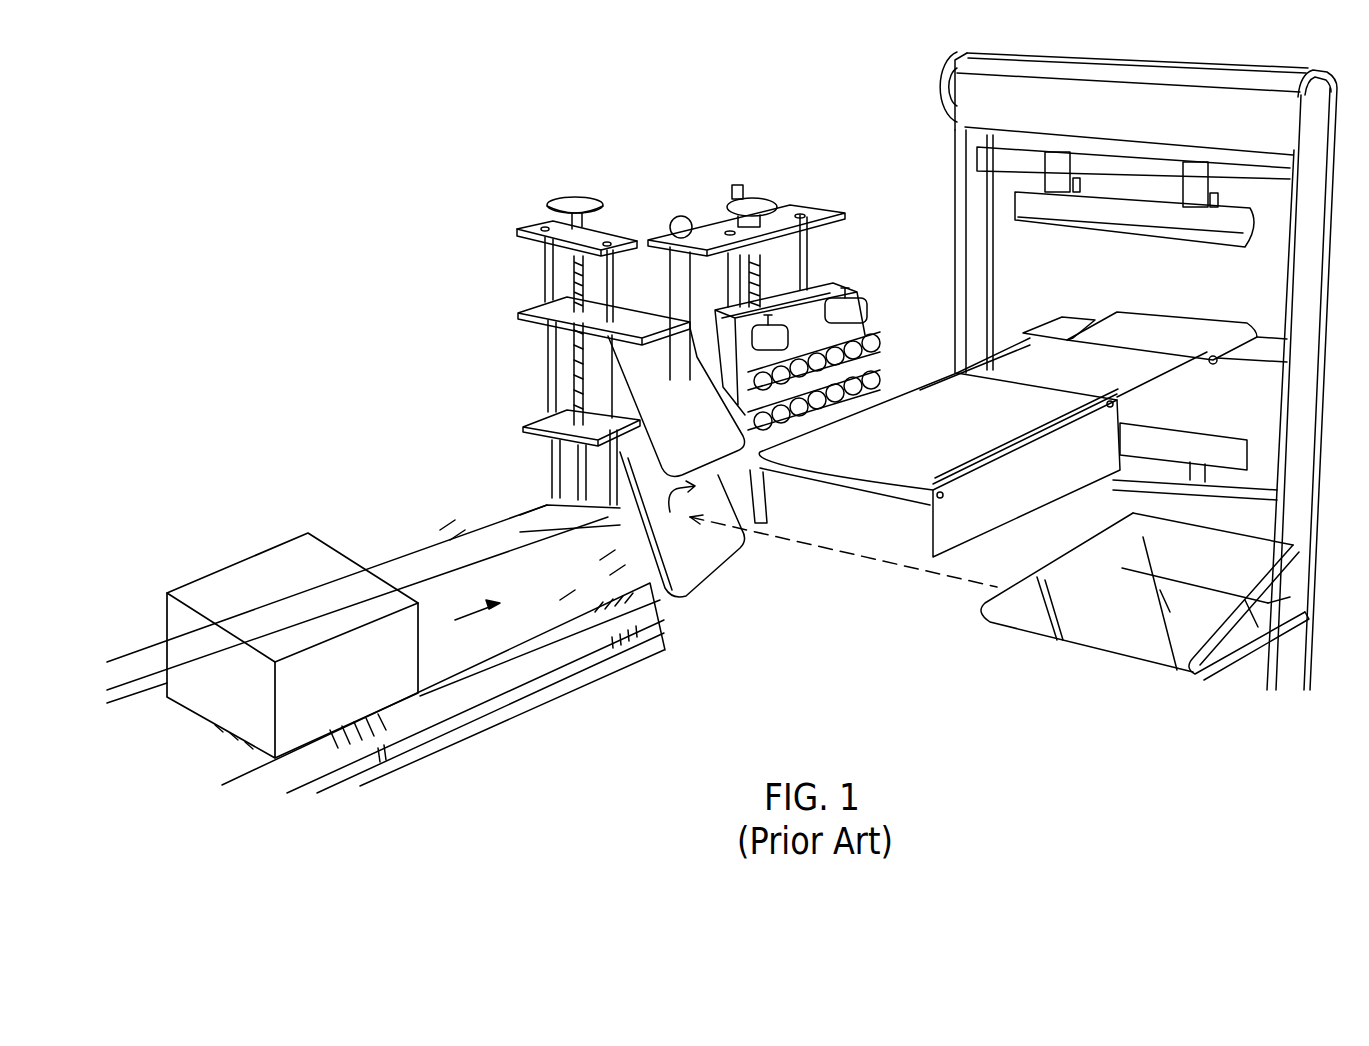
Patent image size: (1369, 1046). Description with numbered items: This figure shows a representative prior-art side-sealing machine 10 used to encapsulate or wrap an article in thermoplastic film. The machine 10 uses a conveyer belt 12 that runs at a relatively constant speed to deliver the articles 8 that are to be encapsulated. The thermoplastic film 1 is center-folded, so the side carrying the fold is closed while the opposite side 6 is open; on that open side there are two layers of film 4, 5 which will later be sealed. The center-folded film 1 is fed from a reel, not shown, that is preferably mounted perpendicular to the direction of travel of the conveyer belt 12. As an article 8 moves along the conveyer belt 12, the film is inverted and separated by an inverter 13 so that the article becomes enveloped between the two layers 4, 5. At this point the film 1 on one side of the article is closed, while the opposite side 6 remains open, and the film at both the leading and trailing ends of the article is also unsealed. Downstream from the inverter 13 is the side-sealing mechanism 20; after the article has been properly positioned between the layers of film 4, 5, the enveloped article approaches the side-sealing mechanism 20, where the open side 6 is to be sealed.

The thermoplastic film 1 is at (1130, 637).
The film layer 4 is at (1300, 538).
The film layer 5 is at (1308, 614).
The opposite side 6 is at (1293, 597).
The article 8 is at (260, 563).
The machine 10 is at (452, 273).
The conveyer belt 12 is at (450, 648).
The inverter 13 is at (702, 587).
The side-sealing mechanism 20 is at (712, 213).